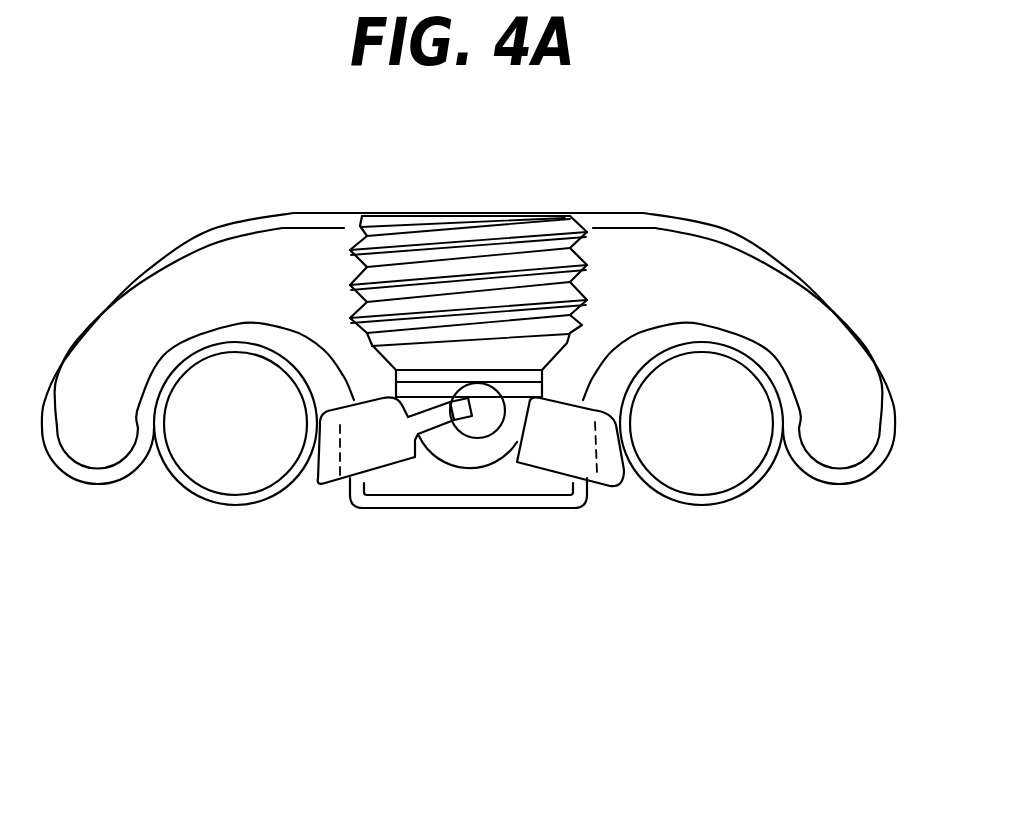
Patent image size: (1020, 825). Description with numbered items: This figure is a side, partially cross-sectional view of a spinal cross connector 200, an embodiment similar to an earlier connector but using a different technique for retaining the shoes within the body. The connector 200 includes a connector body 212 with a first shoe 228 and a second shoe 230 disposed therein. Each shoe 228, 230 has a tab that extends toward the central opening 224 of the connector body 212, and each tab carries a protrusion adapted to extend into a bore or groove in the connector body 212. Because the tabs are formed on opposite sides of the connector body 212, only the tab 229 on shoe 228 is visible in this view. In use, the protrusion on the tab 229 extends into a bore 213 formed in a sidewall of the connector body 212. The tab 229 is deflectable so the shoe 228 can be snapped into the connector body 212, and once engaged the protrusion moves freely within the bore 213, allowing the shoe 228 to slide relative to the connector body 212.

The connector 200 is at (680, 165).
The connector body 212 is at (687, 287).
The bore 213 is at (493, 397).
The central opening 224 is at (357, 198).
The shoe 228 is at (322, 473).
The tab 229 is at (451, 423).
The shoe 230 is at (612, 475).